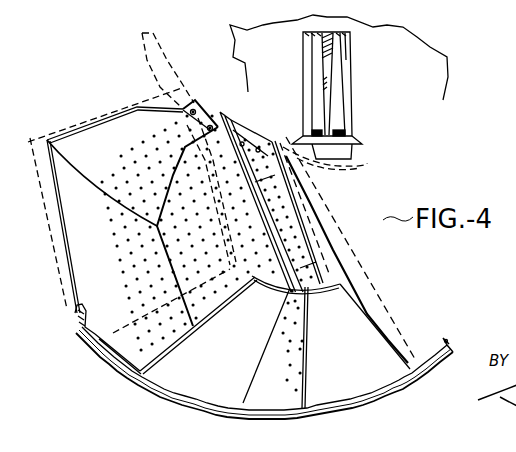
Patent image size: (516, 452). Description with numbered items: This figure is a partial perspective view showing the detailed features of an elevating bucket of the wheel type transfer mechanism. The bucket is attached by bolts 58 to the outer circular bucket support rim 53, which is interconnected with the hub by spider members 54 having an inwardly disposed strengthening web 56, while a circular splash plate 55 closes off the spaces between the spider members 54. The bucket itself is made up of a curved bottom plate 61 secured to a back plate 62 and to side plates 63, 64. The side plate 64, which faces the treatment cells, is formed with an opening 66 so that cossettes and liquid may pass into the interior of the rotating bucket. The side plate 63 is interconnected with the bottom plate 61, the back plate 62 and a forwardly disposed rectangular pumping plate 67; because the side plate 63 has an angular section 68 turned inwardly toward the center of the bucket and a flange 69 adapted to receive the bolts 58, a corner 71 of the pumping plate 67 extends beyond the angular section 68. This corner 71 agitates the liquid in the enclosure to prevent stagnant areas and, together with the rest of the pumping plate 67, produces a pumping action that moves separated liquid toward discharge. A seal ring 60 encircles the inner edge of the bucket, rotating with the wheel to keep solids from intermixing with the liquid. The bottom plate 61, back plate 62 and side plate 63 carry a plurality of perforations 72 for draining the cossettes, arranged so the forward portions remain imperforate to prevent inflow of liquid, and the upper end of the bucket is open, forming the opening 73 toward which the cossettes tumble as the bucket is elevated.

The bucket support rim 53 is at (163, 47).
The spider members 54 is at (345, 75).
The circular splash plate 55 is at (427, 81).
The strengthening web 56 is at (335, 50).
The bolts 58 is at (194, 109).
The seal ring 60 is at (453, 350).
The curved bottom plate 61 is at (120, 343).
The back plate 62 is at (201, 243).
The side plate 63 is at (103, 130).
The side plate 64 is at (226, 351).
The opening 66 is at (275, 352).
The pumping plate 67 is at (70, 328).
The angular section 68 is at (153, 115).
The flange 69 is at (207, 118).
The corner 71 is at (230, 122).
The perforations 72 is at (107, 258).
The opening 73 is at (293, 228).